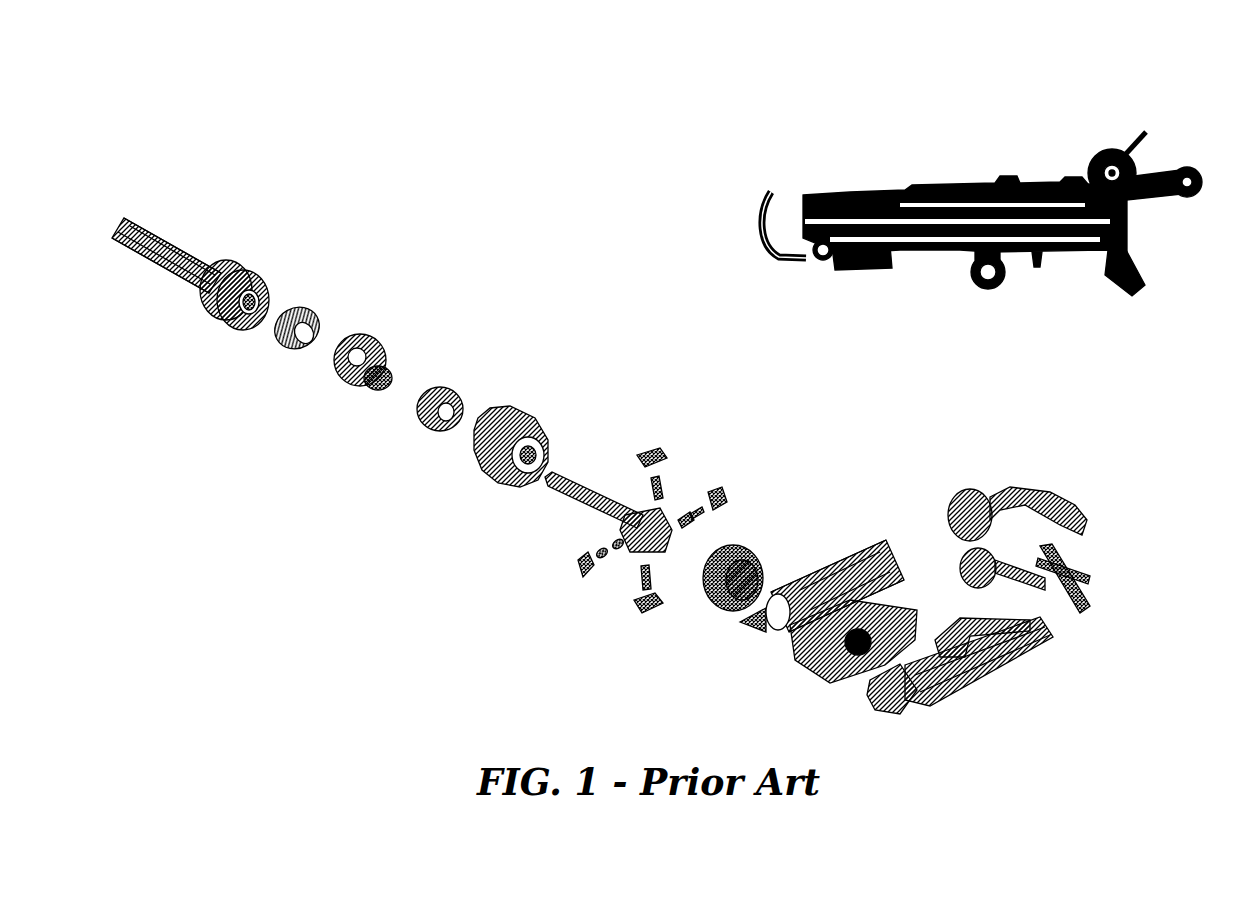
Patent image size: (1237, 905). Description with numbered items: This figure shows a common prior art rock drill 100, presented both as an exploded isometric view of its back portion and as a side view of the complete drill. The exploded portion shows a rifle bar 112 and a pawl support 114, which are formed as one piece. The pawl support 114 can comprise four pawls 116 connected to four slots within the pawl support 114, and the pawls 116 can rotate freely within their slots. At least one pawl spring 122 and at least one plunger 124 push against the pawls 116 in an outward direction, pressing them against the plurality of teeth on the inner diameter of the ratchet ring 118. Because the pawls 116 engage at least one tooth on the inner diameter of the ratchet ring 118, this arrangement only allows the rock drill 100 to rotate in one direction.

The rock drill 100 is at (1043, 122).
The rifle bar 112 is at (560, 495).
The pawl support 114 is at (647, 513).
The pawls 116 is at (578, 567).
The ratchet ring 118 is at (740, 547).
The pawl spring 122 is at (203, 277).
The plunger 124 is at (603, 553).